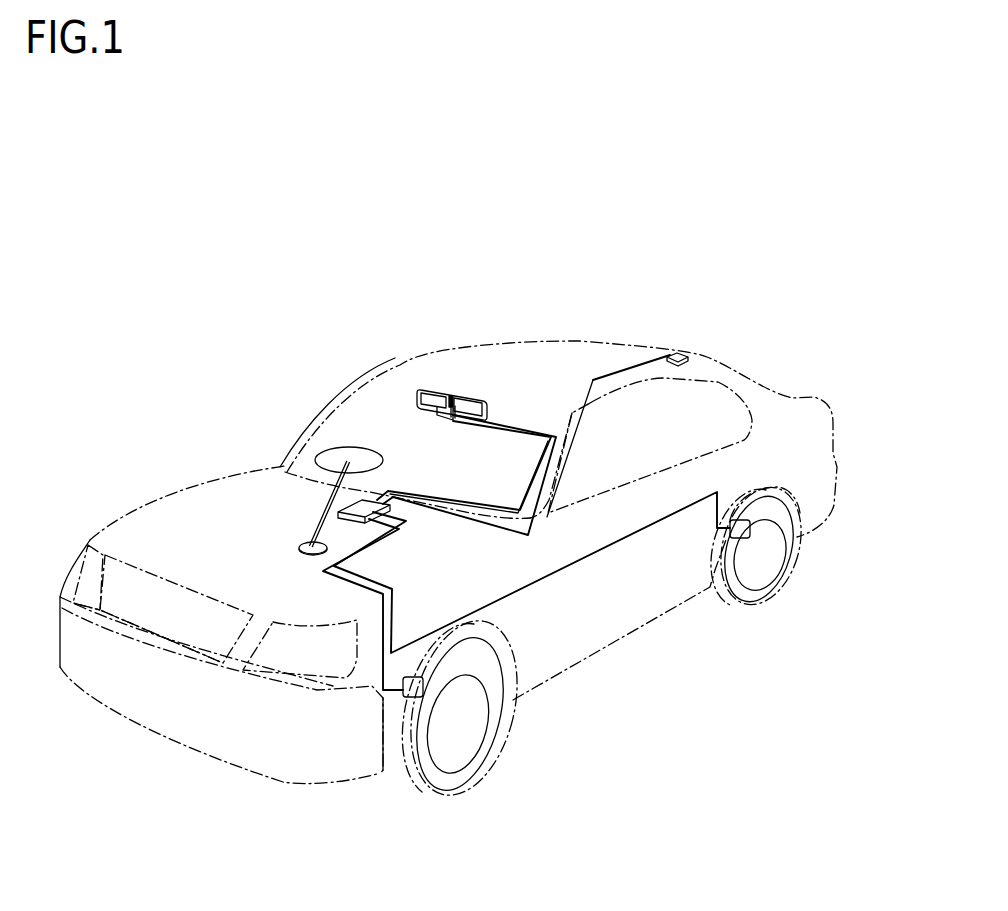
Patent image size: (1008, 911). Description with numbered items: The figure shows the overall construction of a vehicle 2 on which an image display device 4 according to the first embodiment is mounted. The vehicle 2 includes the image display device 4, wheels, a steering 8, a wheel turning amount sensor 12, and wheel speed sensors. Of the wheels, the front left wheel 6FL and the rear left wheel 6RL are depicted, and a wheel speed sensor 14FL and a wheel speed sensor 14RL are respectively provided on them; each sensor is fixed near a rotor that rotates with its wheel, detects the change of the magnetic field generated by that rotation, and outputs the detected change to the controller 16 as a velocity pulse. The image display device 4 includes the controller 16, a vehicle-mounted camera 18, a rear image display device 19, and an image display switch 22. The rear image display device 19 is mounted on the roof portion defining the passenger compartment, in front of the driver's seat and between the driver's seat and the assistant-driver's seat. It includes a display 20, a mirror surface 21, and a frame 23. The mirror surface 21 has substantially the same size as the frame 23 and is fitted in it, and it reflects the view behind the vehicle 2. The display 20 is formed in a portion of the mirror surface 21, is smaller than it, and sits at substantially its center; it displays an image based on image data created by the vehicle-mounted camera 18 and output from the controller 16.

The vehicle 2 is at (815, 397).
The image display device 4 is at (410, 288).
The front left wheel 6FL is at (496, 731).
The rear left wheel 6RL is at (790, 565).
The steering 8 is at (320, 516).
The wheel turning amount sensor 12 is at (297, 543).
The wheel speed sensor 14FL is at (423, 687).
The wheel speed sensor 14RL is at (750, 528).
The controller 16 is at (362, 498).
The vehicle-mounted camera 18 is at (677, 352).
The rear image display device 19 is at (533, 321).
The display 20 is at (438, 393).
The mirror surface 21 is at (432, 397).
The image display switch 22 is at (414, 397).
The frame 23 is at (482, 407).